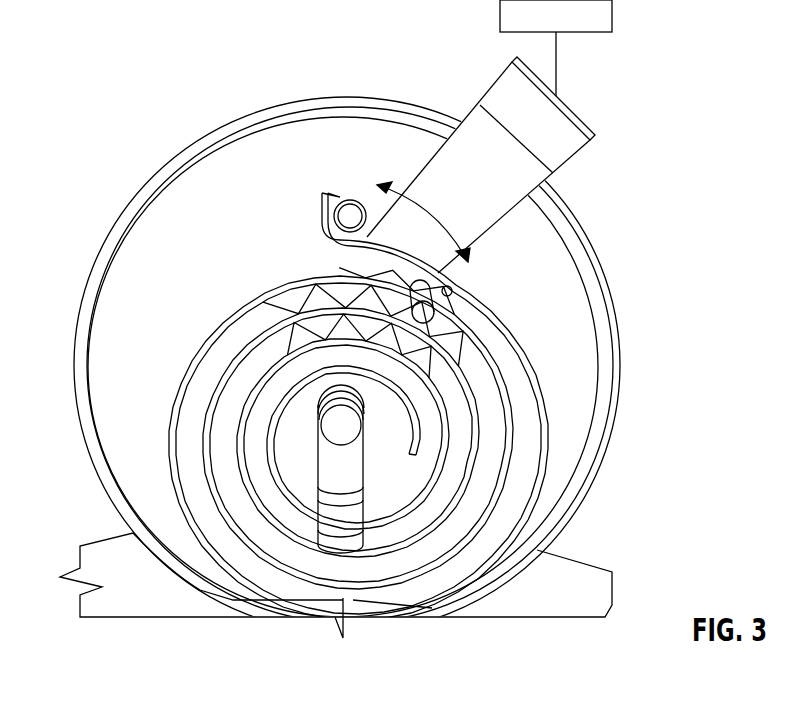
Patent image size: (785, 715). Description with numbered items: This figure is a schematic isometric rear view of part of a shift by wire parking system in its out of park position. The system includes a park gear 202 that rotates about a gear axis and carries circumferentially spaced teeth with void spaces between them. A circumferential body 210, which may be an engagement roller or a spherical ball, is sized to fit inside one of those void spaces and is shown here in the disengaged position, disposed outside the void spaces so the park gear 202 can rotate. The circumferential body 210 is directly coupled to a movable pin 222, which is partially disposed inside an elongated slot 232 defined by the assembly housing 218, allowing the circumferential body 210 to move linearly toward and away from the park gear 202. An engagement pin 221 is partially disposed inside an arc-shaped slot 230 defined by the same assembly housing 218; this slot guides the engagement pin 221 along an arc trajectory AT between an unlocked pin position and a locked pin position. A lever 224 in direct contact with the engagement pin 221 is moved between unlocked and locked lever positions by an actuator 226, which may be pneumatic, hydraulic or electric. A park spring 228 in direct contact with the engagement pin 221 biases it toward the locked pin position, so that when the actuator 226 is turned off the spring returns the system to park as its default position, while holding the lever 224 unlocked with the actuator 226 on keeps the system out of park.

The park gear 202 is at (95, 540).
The circumferential body 210 is at (325, 483).
The assembly housing 218 is at (263, 113).
The engagement pin 221 is at (325, 196).
The movable pin 222 is at (340, 425).
The lever 224 is at (577, 147).
The actuator 226 is at (612, 14).
The park spring 228 is at (538, 492).
The arc-shaped slot 230 is at (447, 293).
The elongated slot 232 is at (318, 495).
The arc trajectory AT is at (433, 213).